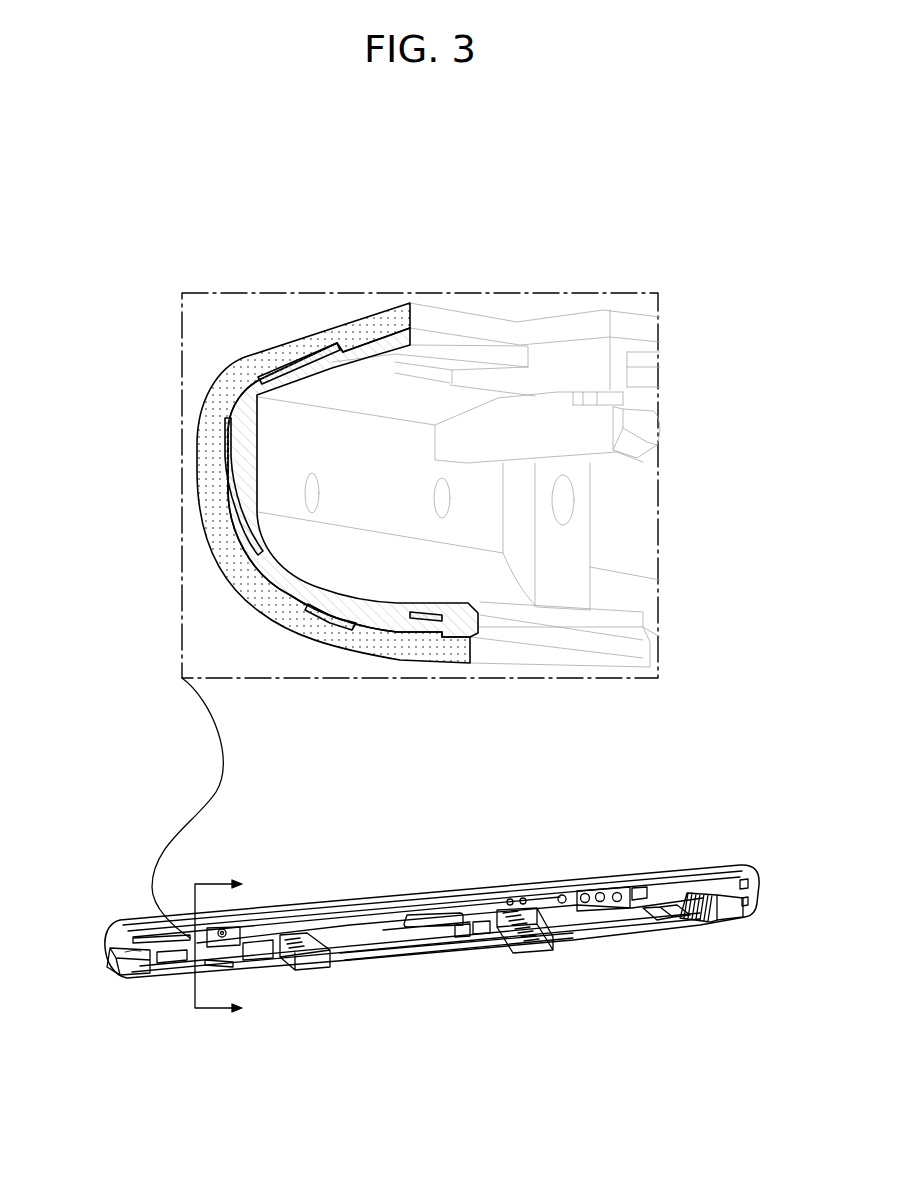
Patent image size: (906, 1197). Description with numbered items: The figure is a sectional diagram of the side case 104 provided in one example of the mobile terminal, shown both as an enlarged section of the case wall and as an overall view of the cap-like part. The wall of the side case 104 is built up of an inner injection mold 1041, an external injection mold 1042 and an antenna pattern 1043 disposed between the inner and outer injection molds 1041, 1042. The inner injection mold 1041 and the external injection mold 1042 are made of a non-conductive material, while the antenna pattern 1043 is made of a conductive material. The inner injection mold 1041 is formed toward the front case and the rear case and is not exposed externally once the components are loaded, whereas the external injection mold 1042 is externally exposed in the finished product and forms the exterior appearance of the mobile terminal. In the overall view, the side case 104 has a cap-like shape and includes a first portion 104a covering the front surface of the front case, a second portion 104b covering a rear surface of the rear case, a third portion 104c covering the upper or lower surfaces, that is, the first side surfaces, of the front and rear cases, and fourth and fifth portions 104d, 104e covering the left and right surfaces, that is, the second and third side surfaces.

The side case 104 is at (403, 882).
The first portion 104a is at (369, 599).
The second portion 104b is at (452, 663).
The third portion 104c is at (483, 907).
The fourth portion 104d is at (753, 895).
The fifth portion 104e is at (112, 942).
The inner injection mold 1041 is at (388, 617).
The external injection mold 1042 is at (270, 602).
The antenna pattern 1043 is at (230, 500).